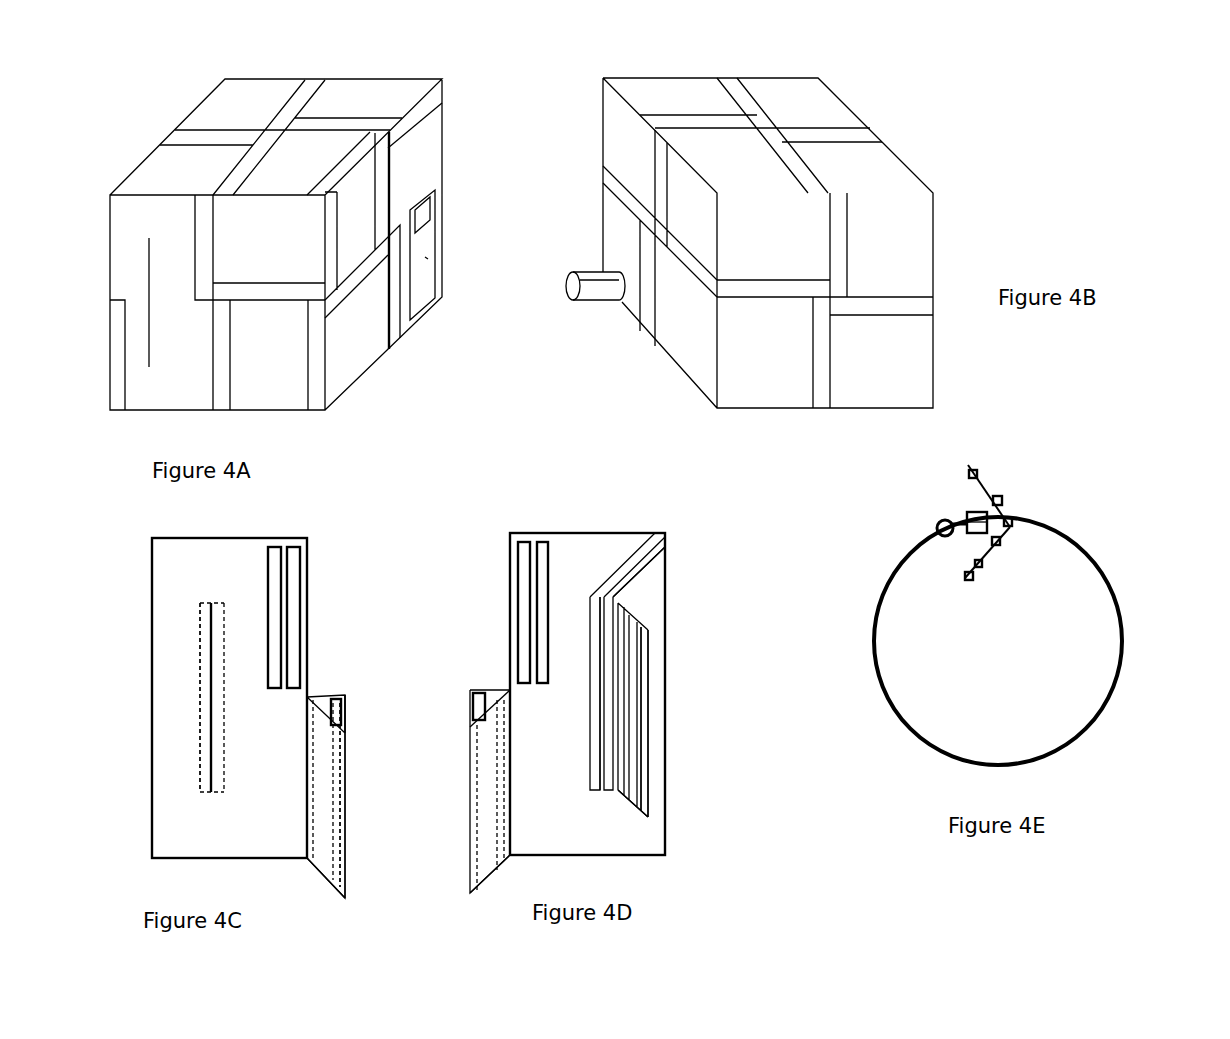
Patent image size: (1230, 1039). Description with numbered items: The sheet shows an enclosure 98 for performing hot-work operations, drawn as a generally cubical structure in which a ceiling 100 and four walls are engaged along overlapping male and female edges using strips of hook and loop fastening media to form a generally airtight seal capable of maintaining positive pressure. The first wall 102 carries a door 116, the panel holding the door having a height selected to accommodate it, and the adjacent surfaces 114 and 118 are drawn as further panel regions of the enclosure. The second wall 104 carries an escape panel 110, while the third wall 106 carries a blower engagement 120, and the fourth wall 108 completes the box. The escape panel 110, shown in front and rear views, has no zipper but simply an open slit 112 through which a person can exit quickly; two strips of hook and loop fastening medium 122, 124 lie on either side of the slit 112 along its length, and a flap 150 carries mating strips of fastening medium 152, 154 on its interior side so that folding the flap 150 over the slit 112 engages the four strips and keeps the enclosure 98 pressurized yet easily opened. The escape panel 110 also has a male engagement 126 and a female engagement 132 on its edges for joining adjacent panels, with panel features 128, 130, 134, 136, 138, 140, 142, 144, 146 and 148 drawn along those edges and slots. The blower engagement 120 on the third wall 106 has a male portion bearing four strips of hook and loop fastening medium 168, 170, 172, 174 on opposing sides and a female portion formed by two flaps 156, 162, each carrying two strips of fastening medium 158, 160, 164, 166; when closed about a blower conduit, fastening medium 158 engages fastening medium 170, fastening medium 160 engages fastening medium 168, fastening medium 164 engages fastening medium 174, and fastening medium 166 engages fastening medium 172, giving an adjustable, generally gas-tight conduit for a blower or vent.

In FIG. 4A, the enclosure 98 is at (121, 122).
In FIG. 4B, the enclosure 98 is at (556, 105).
In FIG. 4A, the ceiling 100 is at (230, 92).
In FIG. 4B, the ceiling 100 is at (817, 92).
In FIG. 4A, the first wall 102 is at (352, 367).
In FIG. 4A, the second wall 104 is at (278, 400).
In FIG. 4B, the third wall 106 is at (698, 360).
In FIG. 4B, the fourth wall 108 is at (755, 397).
In FIG. 4A, the escape panel 110 is at (138, 385).
In FIG. 4C, the escape panel 110 is at (121, 565).
In FIG. 4D, the escape panel 110 is at (534, 508).
In FIG. 4A, the slit 112 is at (149, 277).
In FIG. 4C, the slit 112 is at (210, 793).
In FIG. 4D, the slit 112 is at (663, 543).
In FIG. 4A, the right side panel 114 is at (433, 147).
In FIG. 4A, the door 116 is at (425, 295).
In FIG. 4B, the left side panel 118 is at (610, 222).
In FIG. 4B, the blower engagement 120 is at (587, 300).
In FIG. 4E, the blower engagement 120 is at (1122, 532).
In FIG. 4C, the hook and loop fastening medium 122 is at (198, 633).
In FIG. 4D, the hook and loop fastening medium 122 is at (665, 550).
In FIG. 4C, the hook and loop fastening medium 124 is at (225, 795).
In FIG. 4D, the hook and loop fastening medium 124 is at (657, 532).
In FIG. 4C, the male engagement 126 is at (307, 545).
In FIG. 4D, the male engagement 126 is at (510, 542).
In FIG. 4C, the slot wall 128 is at (292, 577).
In FIG. 4C, the panel face 130 is at (273, 570).
In FIG. 4C, the female engagement 132 is at (307, 803).
In FIG. 4D, the female engagement 132 is at (512, 832).
In FIG. 4C, the flap outer edge 134 is at (345, 718).
In FIG. 4D, the flap outer edge 134 is at (472, 893).
In FIG. 4C, the flap corner 136 is at (342, 893).
In FIG. 4D, the flap corner 136 is at (468, 725).
In FIG. 4C, the locking tab 138 is at (347, 700).
In FIG. 4D, the locking tab 138 is at (482, 858).
In FIG. 4C, the tab slot 140 is at (337, 698).
In FIG. 4D, the tab slot 140 is at (498, 817).
In FIG. 4C, the flap tab 142 is at (337, 847).
In FIG. 4D, the flap tab 142 is at (473, 707).
In FIG. 4C, the bottom edge 144 is at (317, 853).
In FIG. 4D, the bottom edge 144 is at (510, 689).
In FIG. 4D, the slot side wall 146 is at (522, 592).
In FIG. 4D, the slot opening 148 is at (552, 553).
In FIG. 4D, the flap 150 is at (648, 817).
In FIG. 4D, the hook and loop fastening medium 152 is at (645, 780).
In FIG. 4D, the hook and loop fastening medium 154 is at (625, 795).
In FIG. 4E, the flap 156 is at (967, 462).
In FIG. 4E, the hook and loop fastening medium 158 is at (975, 475).
In FIG. 4E, the hook and loop fastening medium 160 is at (993, 503).
In FIG. 4E, the flap 162 is at (965, 587).
In FIG. 4E, the hook and loop fastening medium 164 is at (977, 570).
In FIG. 4E, the hook and loop fastening medium 166 is at (1007, 547).
In FIG. 4E, the hook and loop fastening medium 168 is at (973, 517).
In FIG. 4E, the hook and loop fastening medium 170 is at (950, 520).
In FIG. 4E, the hook and loop fastening medium 172 is at (987, 532).
In FIG. 4E, the hook and loop fastening medium 174 is at (933, 538).